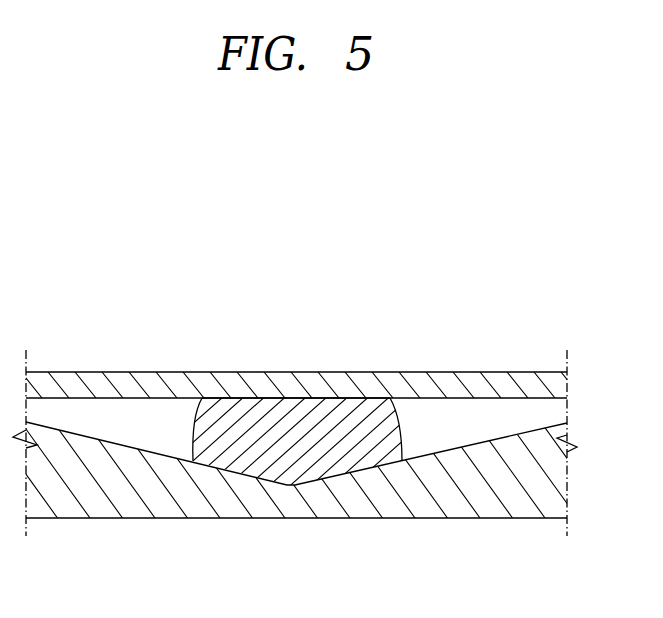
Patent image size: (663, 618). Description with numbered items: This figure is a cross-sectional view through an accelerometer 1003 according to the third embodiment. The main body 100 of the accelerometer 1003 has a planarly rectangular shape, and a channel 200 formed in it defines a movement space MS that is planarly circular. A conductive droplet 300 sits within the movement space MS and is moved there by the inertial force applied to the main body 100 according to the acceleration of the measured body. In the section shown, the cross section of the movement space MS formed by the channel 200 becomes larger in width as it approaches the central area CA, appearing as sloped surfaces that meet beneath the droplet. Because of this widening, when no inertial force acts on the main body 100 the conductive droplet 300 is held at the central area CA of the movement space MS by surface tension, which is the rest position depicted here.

The accelerometer 1003 is at (318, 274).
The main body 100 is at (490, 508).
The channel 200 is at (107, 441).
The conductive droplet 300 is at (315, 450).
The central area CA is at (301, 430).
The movement space MS is at (446, 430).